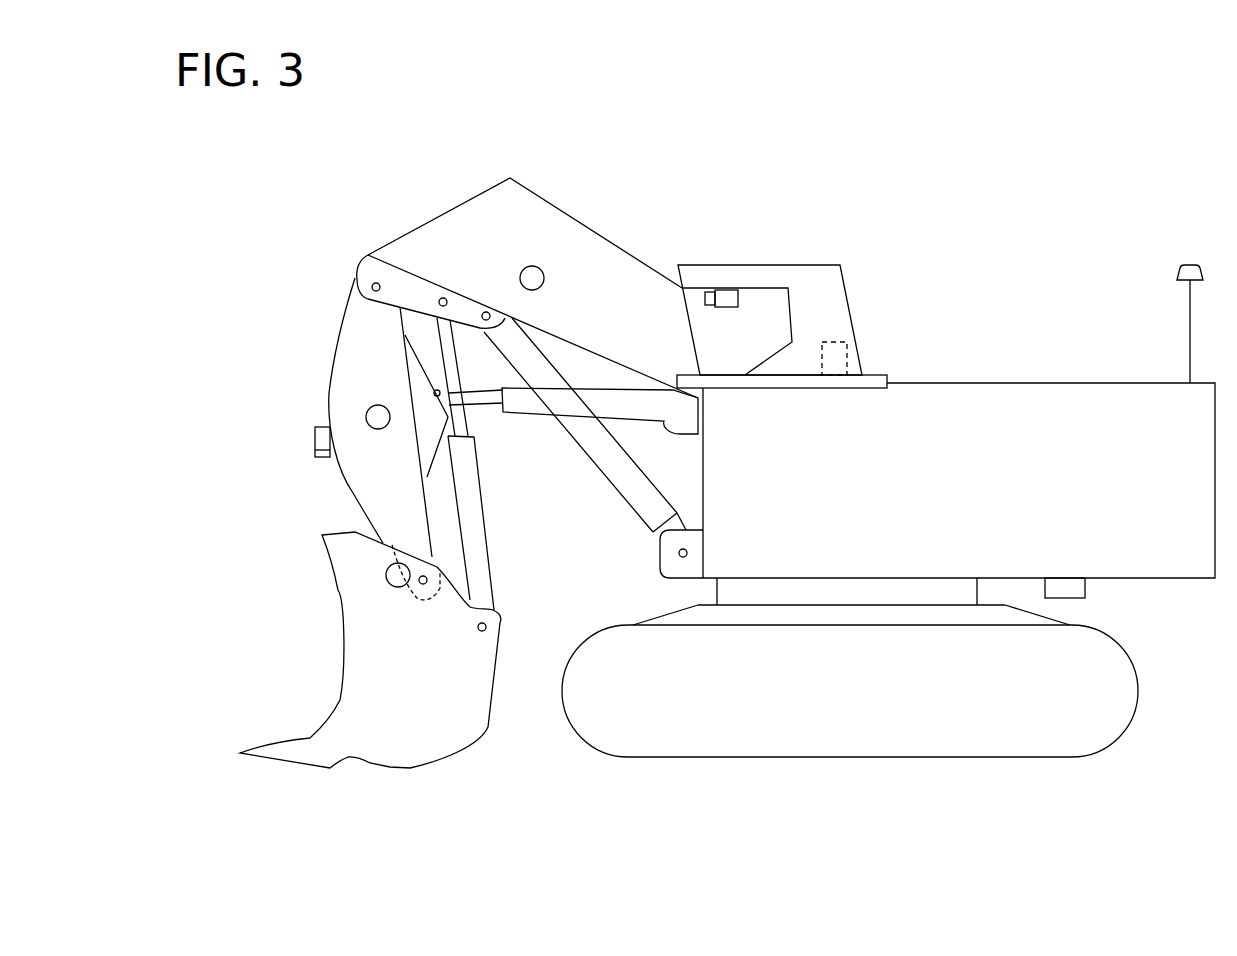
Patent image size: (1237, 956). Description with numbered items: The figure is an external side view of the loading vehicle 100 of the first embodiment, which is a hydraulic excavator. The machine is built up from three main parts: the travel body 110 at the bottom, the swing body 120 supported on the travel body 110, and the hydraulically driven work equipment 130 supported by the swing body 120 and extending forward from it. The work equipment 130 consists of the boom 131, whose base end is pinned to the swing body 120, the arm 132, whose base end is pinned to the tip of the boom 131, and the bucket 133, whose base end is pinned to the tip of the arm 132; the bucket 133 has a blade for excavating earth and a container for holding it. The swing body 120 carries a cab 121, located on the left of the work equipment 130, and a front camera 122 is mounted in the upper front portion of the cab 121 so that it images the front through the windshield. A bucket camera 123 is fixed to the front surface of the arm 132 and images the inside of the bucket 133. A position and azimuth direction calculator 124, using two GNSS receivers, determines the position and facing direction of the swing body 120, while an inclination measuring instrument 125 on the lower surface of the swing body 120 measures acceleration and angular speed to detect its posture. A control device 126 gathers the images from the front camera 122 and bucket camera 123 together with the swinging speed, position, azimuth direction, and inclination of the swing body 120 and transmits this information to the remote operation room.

The loading vehicle 100 is at (1073, 187).
The travel body 110 is at (843, 760).
The swing body 120 is at (1087, 383).
The cab 121 is at (792, 265).
The front camera 122 is at (725, 290).
The bucket camera 123 is at (313, 440).
The position and azimuth direction calculator 124 is at (1192, 263).
The inclination measuring instrument 125 is at (1087, 592).
The control device 126 is at (835, 342).
The work equipment 130 is at (647, 225).
The boom 131 is at (552, 172).
The arm 132 is at (333, 358).
The bucket 133 is at (412, 767).